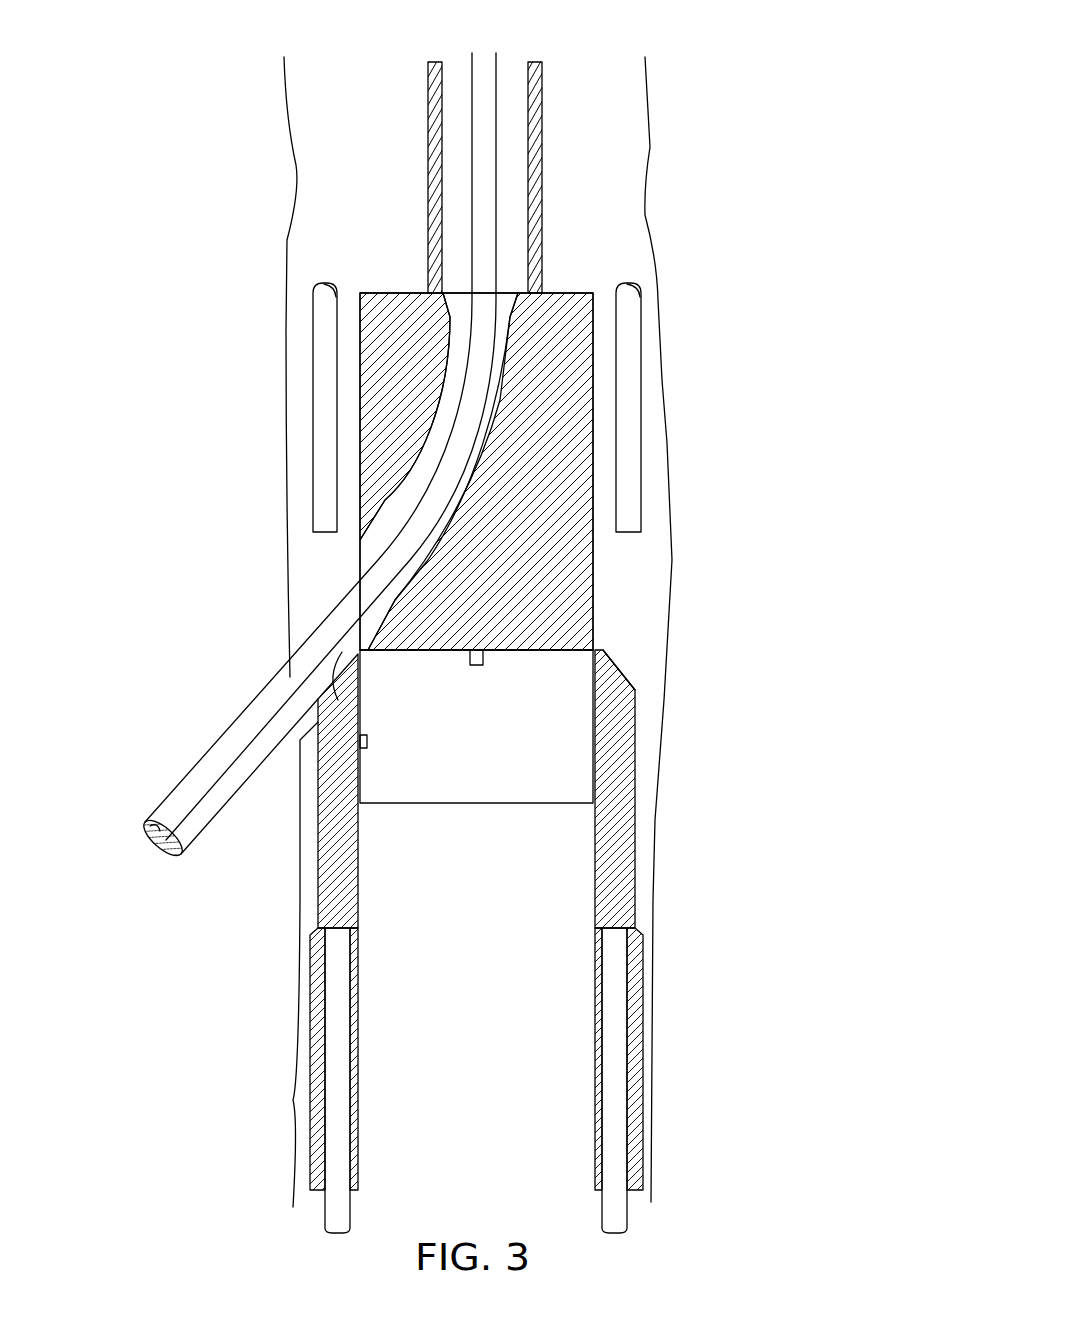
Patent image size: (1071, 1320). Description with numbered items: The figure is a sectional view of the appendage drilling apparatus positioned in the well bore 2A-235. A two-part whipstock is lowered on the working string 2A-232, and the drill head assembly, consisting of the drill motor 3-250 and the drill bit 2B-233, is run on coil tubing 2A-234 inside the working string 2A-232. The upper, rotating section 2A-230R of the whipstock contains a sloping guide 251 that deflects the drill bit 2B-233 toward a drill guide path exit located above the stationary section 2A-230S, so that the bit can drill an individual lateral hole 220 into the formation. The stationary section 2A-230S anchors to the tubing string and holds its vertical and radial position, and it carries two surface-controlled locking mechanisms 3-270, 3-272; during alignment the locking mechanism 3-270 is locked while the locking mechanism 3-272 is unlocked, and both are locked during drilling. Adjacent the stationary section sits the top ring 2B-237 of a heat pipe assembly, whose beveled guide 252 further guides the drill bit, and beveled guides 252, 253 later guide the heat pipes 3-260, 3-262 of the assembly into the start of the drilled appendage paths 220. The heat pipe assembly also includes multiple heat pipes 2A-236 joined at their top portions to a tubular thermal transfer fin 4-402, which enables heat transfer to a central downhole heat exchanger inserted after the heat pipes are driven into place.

The working string 2A-232 is at (534, 130).
The coil tubing 2A-234 is at (475, 122).
The heat pipe 3-260 is at (315, 385).
The heat pipe 3-262 is at (628, 383).
The rotating section of whipstock 2A-230R is at (593, 453).
The well bore 2A-235 is at (672, 546).
The sloping guide 251 is at (382, 504).
The stationary section of whipstock 2A-230S is at (567, 662).
The drill motor 3-250 is at (285, 707).
The beveled guide 253 is at (606, 654).
The lateral hole 220 is at (210, 745).
The drill bit 2B-233 is at (150, 828).
The locking mechanism 3-272 is at (476, 667).
The locking mechanism 3-270 is at (367, 742).
The beveled guide 252 is at (300, 742).
The top ring 2B-237 is at (635, 813).
The heat pipes 2A-236 is at (623, 995).
The thermal transfer fin 4-402 is at (602, 1093).